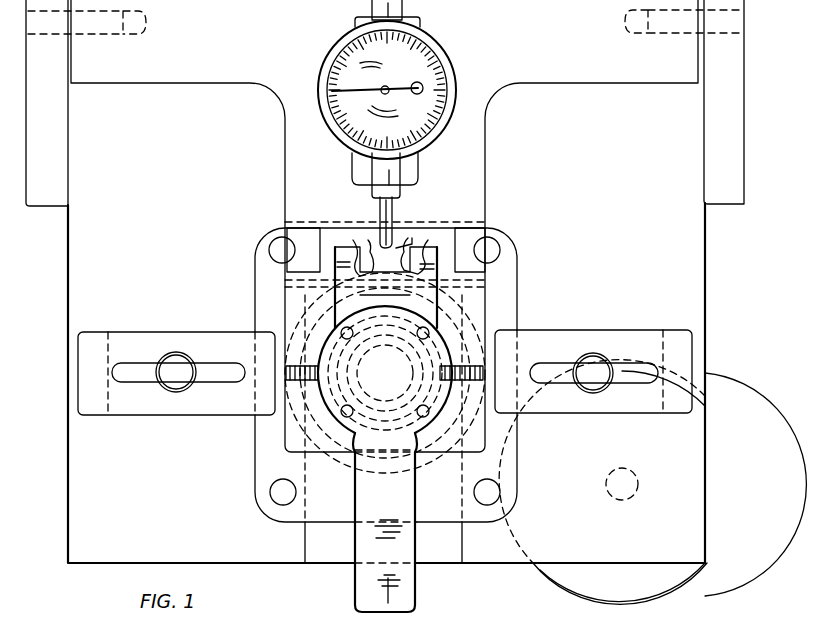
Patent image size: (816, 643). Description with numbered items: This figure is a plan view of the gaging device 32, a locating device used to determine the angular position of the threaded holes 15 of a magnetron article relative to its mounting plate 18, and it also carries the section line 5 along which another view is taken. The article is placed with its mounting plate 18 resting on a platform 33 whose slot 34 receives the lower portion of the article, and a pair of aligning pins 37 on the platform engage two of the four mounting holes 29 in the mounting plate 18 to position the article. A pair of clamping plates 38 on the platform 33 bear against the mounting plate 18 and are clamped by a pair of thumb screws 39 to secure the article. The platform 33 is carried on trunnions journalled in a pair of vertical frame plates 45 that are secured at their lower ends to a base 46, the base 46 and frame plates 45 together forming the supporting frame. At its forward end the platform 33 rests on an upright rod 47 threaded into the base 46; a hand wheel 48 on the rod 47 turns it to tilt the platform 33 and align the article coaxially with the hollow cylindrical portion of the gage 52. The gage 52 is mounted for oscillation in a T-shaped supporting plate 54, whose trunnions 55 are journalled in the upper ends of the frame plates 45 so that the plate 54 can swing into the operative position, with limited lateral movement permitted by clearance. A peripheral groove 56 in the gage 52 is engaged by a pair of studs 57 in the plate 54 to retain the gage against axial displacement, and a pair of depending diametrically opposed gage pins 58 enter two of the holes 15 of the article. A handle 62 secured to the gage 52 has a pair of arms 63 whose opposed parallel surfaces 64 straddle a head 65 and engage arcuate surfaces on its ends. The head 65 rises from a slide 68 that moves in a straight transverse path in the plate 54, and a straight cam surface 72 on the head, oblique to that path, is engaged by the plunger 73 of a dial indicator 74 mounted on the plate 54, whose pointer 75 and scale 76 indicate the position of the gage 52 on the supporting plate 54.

The section line 5- 5 is at (408, 208).
The threaded holes 15 is at (248, 348).
The mounting plate 18 is at (508, 288).
The mounting holes 29 is at (270, 244).
The gaging device 32 is at (47, 527).
The platform 33 is at (705, 293).
The slot 34 is at (305, 548).
The aligning pins 37 is at (500, 238).
The clamping plates 38 is at (188, 340).
The thumb screws 39 is at (176, 393).
The vertical frame plates 45 is at (45, 208).
The base 46 is at (342, 556).
The upright rod 47 is at (625, 498).
The hand wheel 48 is at (732, 523).
The gage 52 is at (321, 355).
The supporting plate 54 is at (485, 160).
The trunnions 55 is at (120, 34).
The peripheral groove 56 is at (324, 439).
The studs 57 is at (290, 420).
The gage pins 58 is at (386, 408).
The handle 62 is at (415, 588).
The arms 63 is at (318, 280).
The parallel surfaces 64 is at (352, 260).
The head 65 is at (380, 220).
The slide 68 is at (492, 230).
The cam surface 72 is at (408, 226).
The plunger 73 is at (372, 200).
The dial indicator 74 is at (448, 58).
The pointer 75 is at (340, 90).
The scale 76 is at (356, 54).